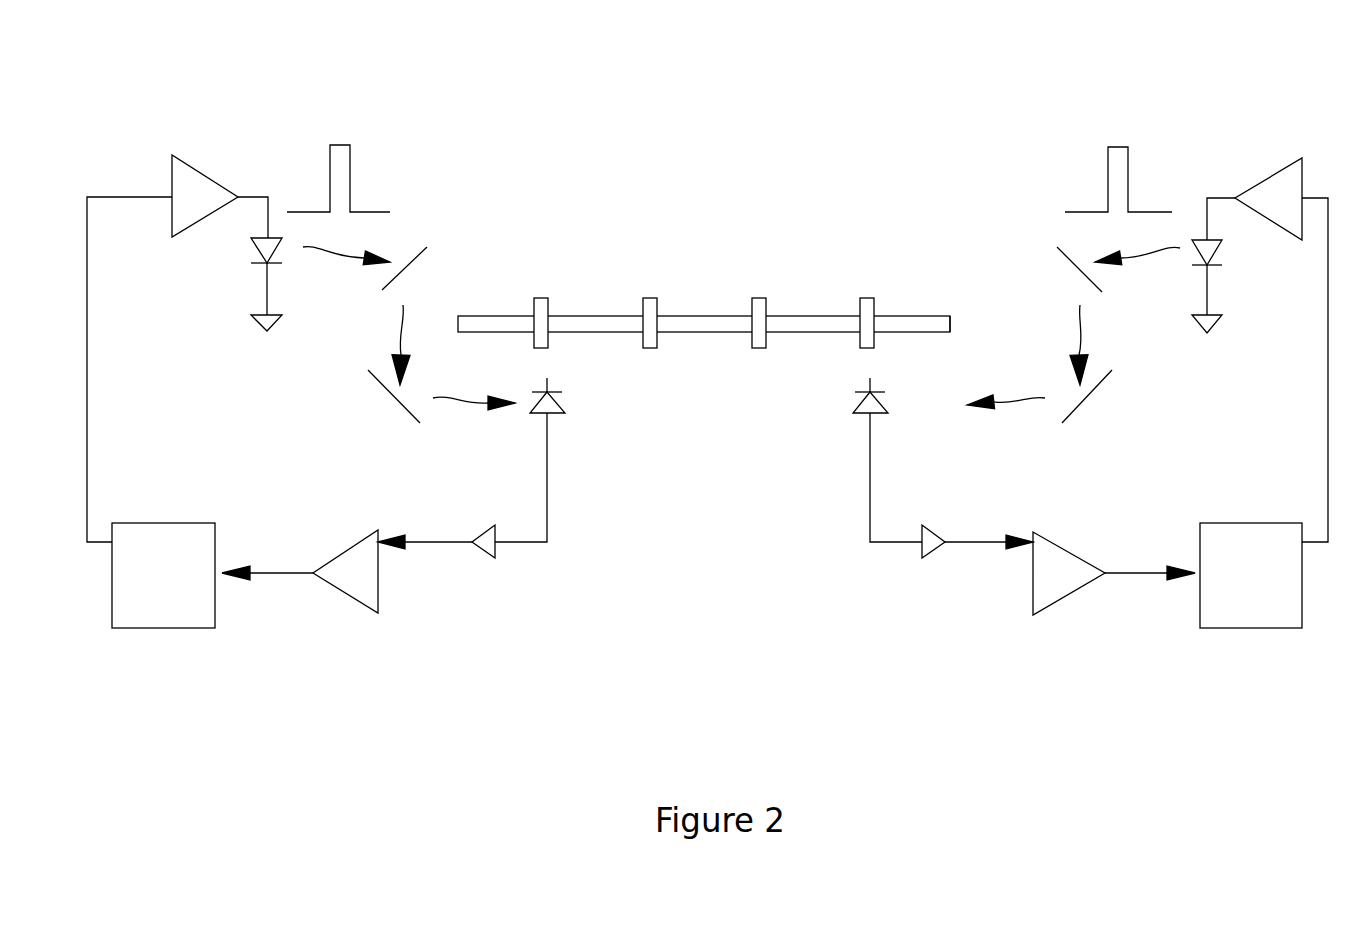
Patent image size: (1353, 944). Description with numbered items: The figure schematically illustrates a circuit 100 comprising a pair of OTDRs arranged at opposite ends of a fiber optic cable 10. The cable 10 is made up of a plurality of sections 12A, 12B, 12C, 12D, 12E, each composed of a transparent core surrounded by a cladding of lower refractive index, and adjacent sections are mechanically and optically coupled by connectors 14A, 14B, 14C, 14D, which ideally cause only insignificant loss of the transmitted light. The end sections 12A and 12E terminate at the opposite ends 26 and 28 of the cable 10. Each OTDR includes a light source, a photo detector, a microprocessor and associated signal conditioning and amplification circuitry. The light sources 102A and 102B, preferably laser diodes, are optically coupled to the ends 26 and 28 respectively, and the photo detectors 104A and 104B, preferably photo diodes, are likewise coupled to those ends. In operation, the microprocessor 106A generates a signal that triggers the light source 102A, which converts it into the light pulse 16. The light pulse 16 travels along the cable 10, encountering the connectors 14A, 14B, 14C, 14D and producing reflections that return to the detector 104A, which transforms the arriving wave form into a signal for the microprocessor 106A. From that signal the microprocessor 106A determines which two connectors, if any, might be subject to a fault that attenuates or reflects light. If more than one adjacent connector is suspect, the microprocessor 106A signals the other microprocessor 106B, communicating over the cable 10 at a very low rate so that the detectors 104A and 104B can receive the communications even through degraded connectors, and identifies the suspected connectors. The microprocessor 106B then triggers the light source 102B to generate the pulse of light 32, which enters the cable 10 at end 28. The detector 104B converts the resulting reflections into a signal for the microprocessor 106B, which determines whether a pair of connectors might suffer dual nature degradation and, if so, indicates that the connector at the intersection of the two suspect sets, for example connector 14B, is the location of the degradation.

The optical sensing system 100 is at (761, 155).
The fiber optic cable 10 is at (800, 231).
The end section 12A is at (480, 316).
The section 12B is at (593, 316).
The section 12C is at (704, 316).
The section 12D is at (818, 316).
The end section 12E is at (933, 316).
The connector 14A is at (541, 348).
The connector 14B is at (650, 348).
The connector 14C is at (759, 348).
The connector 14D is at (867, 348).
The light pulse 16 is at (353, 178).
The pulse of light 32 is at (1118, 145).
The end 26 is at (458, 326).
The end 28 is at (952, 324).
The light source 102A is at (462, 195).
The light source 102B is at (1020, 196).
The photo detector 104A is at (572, 445).
The photo detector 104B is at (848, 441).
The microprocessor 106A is at (197, 628).
The microprocessor 106B is at (1253, 628).